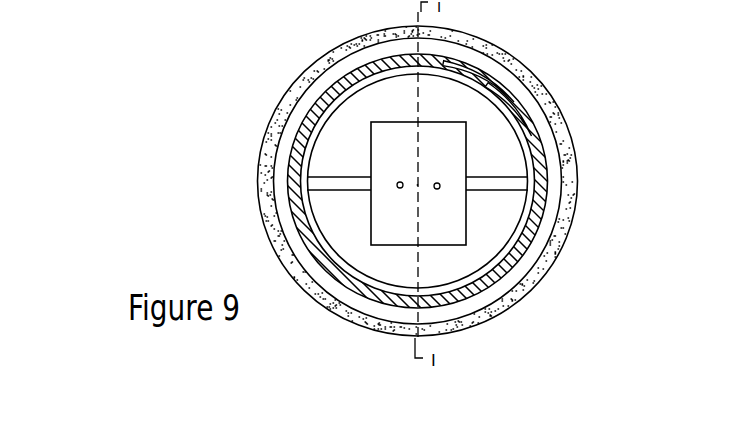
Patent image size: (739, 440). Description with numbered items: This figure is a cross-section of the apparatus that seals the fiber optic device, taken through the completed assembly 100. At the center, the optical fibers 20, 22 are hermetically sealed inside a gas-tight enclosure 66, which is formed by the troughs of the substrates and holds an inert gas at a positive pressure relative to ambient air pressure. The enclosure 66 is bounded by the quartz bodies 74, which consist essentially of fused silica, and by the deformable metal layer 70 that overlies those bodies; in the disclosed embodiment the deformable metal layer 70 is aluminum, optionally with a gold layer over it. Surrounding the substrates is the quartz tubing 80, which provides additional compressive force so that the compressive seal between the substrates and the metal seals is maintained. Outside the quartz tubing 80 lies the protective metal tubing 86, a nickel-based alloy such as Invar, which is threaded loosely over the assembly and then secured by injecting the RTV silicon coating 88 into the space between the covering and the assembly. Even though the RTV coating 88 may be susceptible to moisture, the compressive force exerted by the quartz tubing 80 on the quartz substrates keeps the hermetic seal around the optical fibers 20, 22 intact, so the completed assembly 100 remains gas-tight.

The completed assembly 100 is at (715, 8).
The protective metal tubing 86 is at (490, 38).
The RTV silicon coating 88 is at (523, 90).
The quartz tubing 80 is at (537, 148).
The body 74 is at (338, 135).
The deformable metal layer 70 is at (315, 182).
The gas-tight enclosure 66 is at (418, 150).
The optical fiber 20 is at (398, 189).
The optical fiber 22 is at (439, 190).